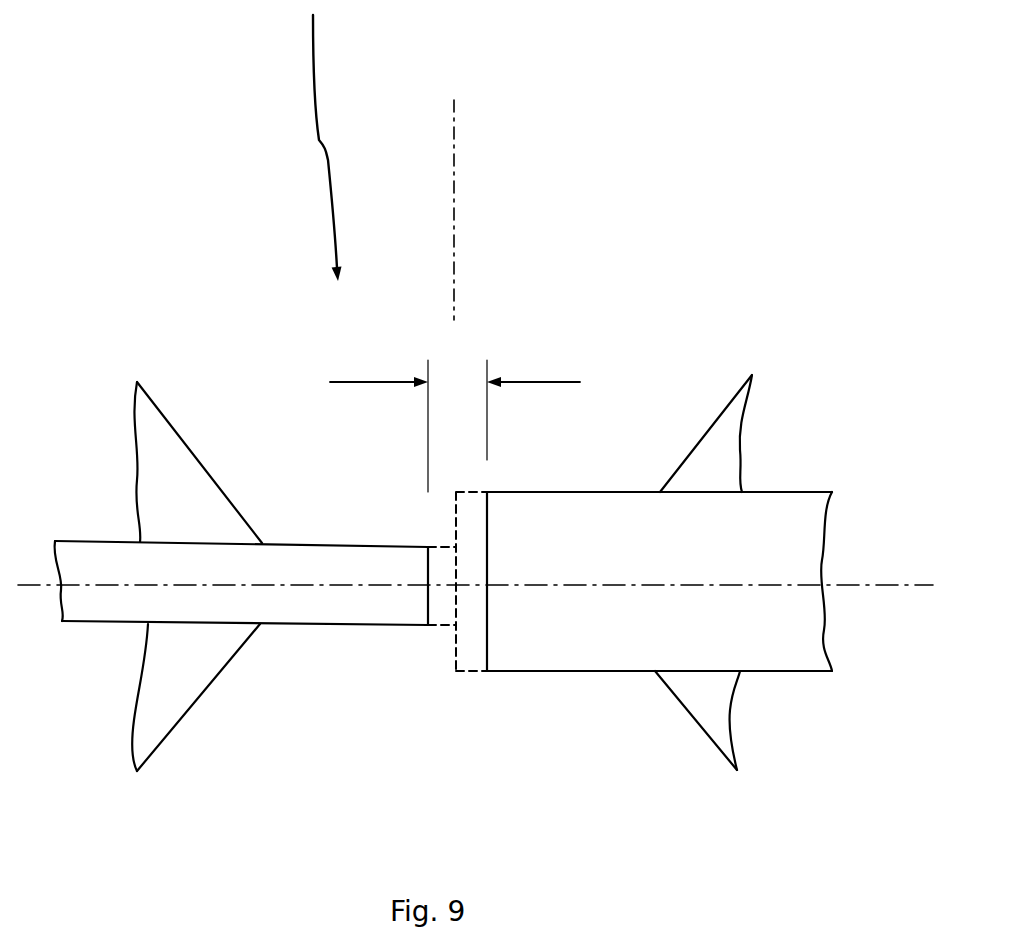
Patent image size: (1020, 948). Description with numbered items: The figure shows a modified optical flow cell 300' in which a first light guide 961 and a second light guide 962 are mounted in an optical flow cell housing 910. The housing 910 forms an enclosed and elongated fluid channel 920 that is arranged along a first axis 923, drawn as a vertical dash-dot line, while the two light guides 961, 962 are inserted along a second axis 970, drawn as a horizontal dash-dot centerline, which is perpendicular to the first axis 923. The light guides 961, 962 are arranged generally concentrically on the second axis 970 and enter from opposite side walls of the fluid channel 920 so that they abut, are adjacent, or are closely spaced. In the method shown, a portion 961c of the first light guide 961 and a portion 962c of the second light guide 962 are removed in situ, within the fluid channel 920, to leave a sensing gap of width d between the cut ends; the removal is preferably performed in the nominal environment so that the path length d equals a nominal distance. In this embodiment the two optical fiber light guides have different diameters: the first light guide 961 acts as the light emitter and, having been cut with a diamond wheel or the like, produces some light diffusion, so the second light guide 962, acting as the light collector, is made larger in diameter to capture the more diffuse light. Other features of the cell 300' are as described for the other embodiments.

The optical flow cell 300' is at (674, 219).
The housing 910 is at (142, 406).
The fluid channel 920 is at (487, 819).
The first axis 923 is at (454, 100).
The first light guide 961 is at (289, 533).
The removed portion of first light guide 961c is at (430, 641).
The second light guide 962 is at (604, 514).
The removed portion of second light guide 962c is at (477, 687).
The second axis 970 is at (475, 577).